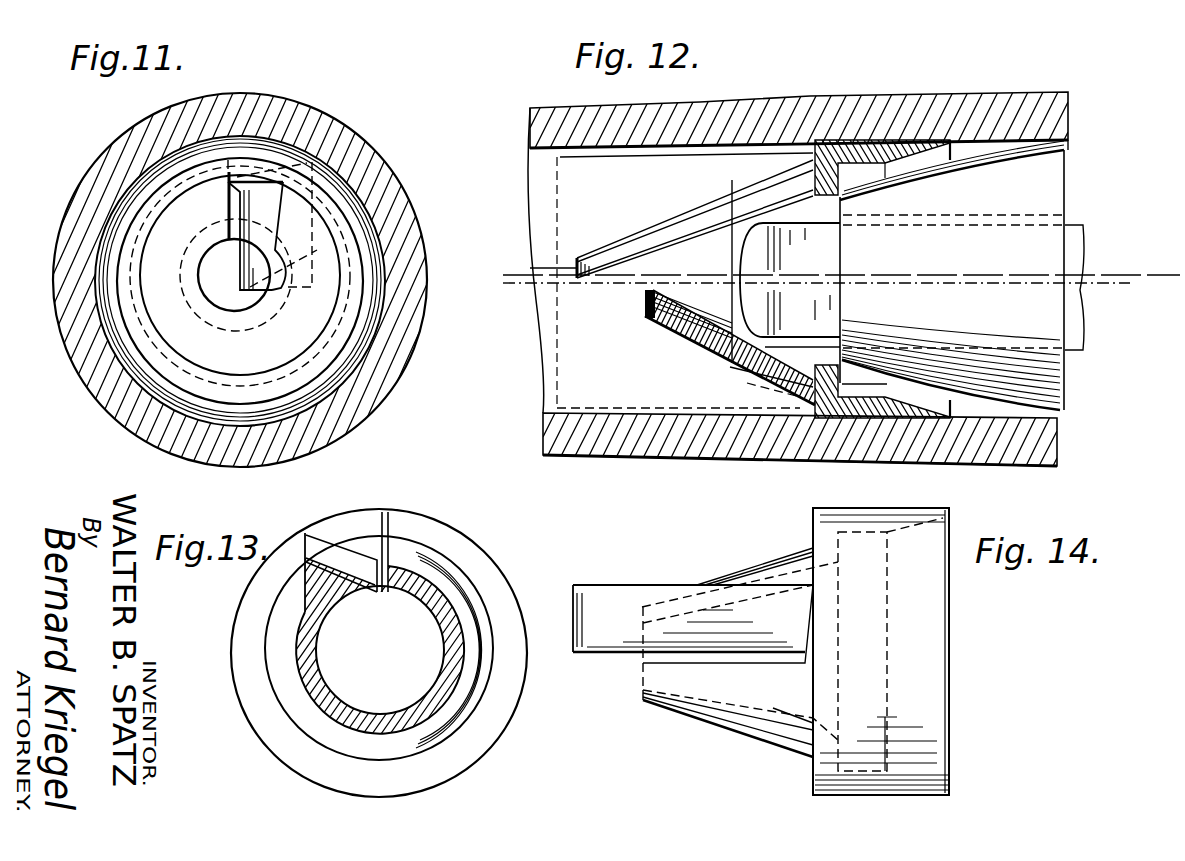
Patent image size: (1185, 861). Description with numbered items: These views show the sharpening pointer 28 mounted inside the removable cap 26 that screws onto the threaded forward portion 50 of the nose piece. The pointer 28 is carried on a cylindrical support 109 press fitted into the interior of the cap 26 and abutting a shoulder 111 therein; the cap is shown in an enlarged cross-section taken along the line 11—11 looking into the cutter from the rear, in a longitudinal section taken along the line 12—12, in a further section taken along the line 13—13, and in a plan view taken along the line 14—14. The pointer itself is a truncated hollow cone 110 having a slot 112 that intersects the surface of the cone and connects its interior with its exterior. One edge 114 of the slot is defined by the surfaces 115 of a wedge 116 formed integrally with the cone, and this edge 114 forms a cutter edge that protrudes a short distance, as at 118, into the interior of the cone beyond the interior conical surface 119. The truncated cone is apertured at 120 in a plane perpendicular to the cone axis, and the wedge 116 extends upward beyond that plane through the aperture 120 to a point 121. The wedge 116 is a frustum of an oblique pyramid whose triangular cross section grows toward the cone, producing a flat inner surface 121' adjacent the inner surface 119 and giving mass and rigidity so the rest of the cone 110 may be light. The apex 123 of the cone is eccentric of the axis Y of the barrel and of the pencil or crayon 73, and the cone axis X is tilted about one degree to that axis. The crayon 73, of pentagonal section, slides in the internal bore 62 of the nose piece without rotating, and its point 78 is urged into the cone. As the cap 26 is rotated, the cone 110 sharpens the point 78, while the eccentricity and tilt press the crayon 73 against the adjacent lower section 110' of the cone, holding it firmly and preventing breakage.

In FIG. 11, the removable cap 26 is at (142, 124).
In FIG. 12, the removable cap 26 is at (542, 108).
In FIG. 12, the pointer 28 is at (650, 328).
In FIG. 12, the forward portion of nose piece 50 is at (1043, 175).
In FIG. 12, the internal bore 62 is at (1037, 217).
In FIG. 12, the pencil or crayon 73 is at (818, 213).
In FIG. 12, the point of the pencil 78 is at (700, 294).
In FIG. 11, the cylindrical support 109 is at (333, 170).
In FIG. 12, the cylindrical support 109 is at (860, 148).
In FIG. 13, the cylindrical support 109 is at (488, 556).
In FIG. 14, the cylindrical support 109 is at (927, 534).
In FIG. 11, the truncated hollow cone 110 is at (240, 281).
In FIG. 12, the truncated hollow cone 110 is at (730, 293).
In FIG. 13, the truncated hollow cone 110 is at (384, 630).
In FIG. 14, the truncated hollow cone 110 is at (755, 555).
In FIG. 12, the lower section of the cone 110' is at (691, 354).
In FIG. 12, the shoulder 111 is at (840, 404).
In FIG. 11, the slot 112 is at (233, 218).
In FIG. 13, the slot 112 is at (388, 556).
In FIG. 14, the slot 112 is at (660, 655).
In FIG. 11, the cutter edge 114 is at (225, 181).
In FIG. 12, the cutter edge 114 is at (658, 260).
In FIG. 13, the cutter edge 114 is at (382, 598).
In FIG. 14, the cutter edge 114 is at (773, 649).
In FIG. 12, the surfaces of the wedge 115 is at (713, 207).
In FIG. 14, the surfaces of the wedge 115 is at (610, 600).
In FIG. 11, the wedge 116 is at (270, 291).
In FIG. 12, the wedge 116 is at (602, 252).
In FIG. 13, the wedge 116 is at (343, 556).
In FIG. 14, the wedge 116 is at (682, 586).
In FIG. 13, the protrusion of cutter edge 118 is at (372, 596).
In FIG. 13, the interior conical surface 119 is at (432, 677).
In FIG. 11, the aperture 120 is at (217, 268).
In FIG. 12, the aperture 120 is at (643, 296).
In FIG. 13, the aperture 120 is at (378, 685).
In FIG. 14, the aperture 120 is at (642, 690).
In FIG. 12, the point of the wedge 121 is at (580, 320).
In FIG. 13, the flat inner surface 121' is at (341, 619).
In FIG. 12, the apex of the cone 123 is at (530, 270).
In FIG. 12, the section line 11— 11 is at (953, 140).
In FIG. 11, the section line 12— 12 is at (243, 121).
In FIG. 12, the section line 13— 13 is at (813, 125).
In FIG. 12, the section line 14— 14 is at (975, 143).